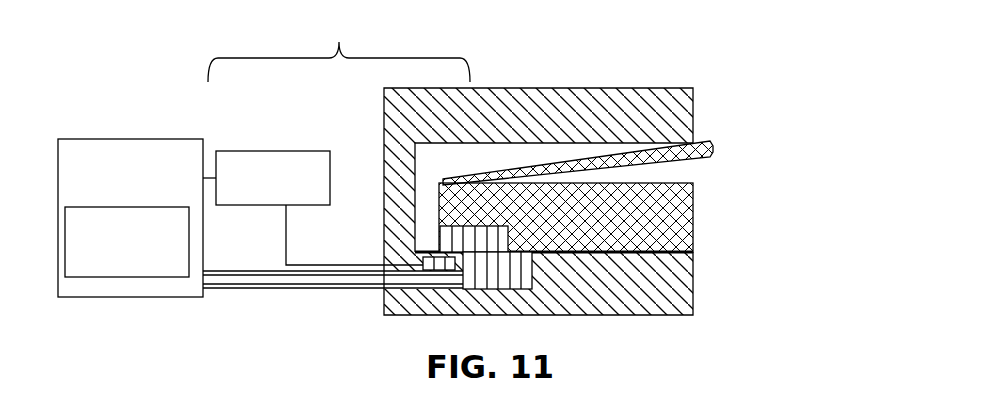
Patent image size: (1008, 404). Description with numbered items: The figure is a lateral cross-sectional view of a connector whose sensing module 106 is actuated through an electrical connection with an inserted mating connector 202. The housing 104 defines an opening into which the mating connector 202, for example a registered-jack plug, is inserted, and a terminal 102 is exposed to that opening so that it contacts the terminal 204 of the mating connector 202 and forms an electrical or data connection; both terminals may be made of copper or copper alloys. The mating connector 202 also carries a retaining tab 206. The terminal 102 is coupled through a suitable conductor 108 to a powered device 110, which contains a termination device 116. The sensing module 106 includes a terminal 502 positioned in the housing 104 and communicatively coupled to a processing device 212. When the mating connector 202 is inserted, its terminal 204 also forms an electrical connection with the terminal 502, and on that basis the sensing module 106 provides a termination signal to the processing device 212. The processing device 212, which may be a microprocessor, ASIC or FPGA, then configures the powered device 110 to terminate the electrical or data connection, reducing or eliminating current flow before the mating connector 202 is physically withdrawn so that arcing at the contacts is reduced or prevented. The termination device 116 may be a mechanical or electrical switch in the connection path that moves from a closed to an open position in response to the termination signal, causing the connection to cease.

The terminal 102 is at (478, 294).
The housing 104 is at (458, 130).
The sensing module 106 is at (339, 47).
The conductor 108 is at (224, 252).
The powered device 110 is at (137, 218).
The termination device 116 is at (127, 242).
The mating connector 202 is at (728, 205).
The terminal 204 is at (429, 224).
The retaining tab 206 is at (752, 160).
The processing device 212 is at (319, 208).
The terminal 502 is at (410, 255).